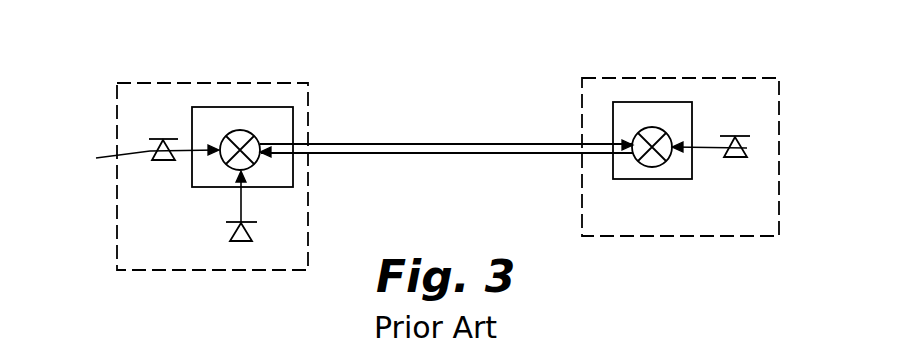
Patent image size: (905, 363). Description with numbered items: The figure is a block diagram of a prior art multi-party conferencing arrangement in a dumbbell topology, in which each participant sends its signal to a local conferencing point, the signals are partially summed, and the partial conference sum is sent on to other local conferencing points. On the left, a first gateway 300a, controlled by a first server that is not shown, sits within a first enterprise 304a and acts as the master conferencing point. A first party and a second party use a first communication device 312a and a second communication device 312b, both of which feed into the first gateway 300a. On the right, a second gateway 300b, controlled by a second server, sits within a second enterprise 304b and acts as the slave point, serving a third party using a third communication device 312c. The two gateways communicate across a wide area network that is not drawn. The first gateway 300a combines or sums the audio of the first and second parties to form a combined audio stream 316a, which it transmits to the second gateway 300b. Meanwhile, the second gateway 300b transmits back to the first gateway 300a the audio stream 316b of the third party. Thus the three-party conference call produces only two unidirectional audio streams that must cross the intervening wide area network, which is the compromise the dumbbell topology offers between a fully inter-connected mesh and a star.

The first gateway 300a is at (210, 107).
The first enterprise 304a is at (258, 83).
The first communication device 312a is at (96, 158).
The second communication device 312b is at (241, 241).
The third communication device 312c is at (747, 148).
The combined audio stream 316a is at (397, 144).
The audio stream of the third party 316b is at (398, 153).
The second gateway 300b is at (647, 102).
The second enterprise 304b is at (748, 78).